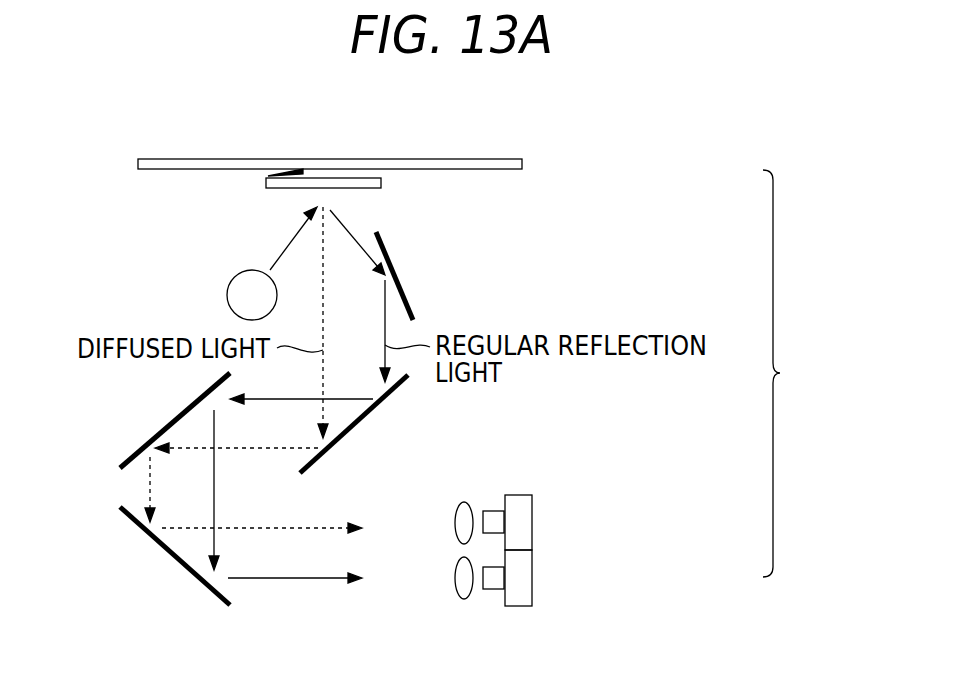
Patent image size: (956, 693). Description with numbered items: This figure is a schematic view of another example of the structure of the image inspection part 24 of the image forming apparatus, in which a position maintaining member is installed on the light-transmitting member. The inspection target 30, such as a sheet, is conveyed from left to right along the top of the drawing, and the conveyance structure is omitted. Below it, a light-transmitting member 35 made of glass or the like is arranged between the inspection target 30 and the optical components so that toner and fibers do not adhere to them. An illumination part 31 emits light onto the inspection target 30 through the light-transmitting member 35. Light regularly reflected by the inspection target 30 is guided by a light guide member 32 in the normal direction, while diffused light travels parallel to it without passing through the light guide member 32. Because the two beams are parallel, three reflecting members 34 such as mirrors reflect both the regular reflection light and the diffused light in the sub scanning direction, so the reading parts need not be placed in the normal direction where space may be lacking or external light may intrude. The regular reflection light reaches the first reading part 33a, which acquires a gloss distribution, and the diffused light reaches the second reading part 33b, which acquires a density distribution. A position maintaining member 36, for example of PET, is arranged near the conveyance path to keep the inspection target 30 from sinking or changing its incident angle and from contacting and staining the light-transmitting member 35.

The image inspection part 24 is at (787, 373).
The inspection target 30 is at (473, 164).
The illumination part 31 is at (238, 297).
The light guide member 32 is at (393, 272).
The first reading part 33a is at (522, 578).
The second reading part 33b is at (522, 523).
The reflecting member 34 is at (160, 430).
The light-transmitting member 35 is at (275, 187).
The position maintaining member 36 is at (300, 170).